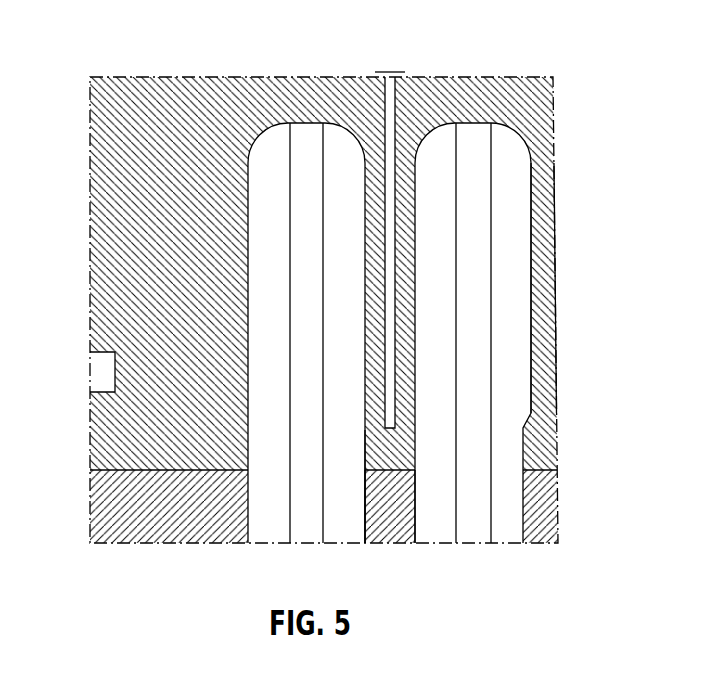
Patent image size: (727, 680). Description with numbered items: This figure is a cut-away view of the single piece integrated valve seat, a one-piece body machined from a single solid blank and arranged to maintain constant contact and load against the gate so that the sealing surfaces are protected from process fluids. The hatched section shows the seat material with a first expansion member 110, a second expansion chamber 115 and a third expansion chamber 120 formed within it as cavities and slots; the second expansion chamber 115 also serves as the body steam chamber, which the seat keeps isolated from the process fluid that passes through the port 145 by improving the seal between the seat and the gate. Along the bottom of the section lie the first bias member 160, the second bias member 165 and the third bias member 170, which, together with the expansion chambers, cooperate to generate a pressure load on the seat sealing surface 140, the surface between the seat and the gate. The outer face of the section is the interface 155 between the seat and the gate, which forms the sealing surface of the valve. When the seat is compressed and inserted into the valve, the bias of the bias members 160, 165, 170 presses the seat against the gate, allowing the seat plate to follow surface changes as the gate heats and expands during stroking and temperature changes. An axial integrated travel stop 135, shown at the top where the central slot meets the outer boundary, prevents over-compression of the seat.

The first expansion member 110 is at (508, 168).
The second expansion chamber 115 is at (391, 398).
The third expansion chamber 120 is at (268, 165).
The axial integrated travel stop 135 is at (390, 71).
The seat sealing surface 140 is at (556, 318).
The port 145 is at (108, 363).
The interface 155 is at (555, 237).
The first bias member 160 is at (558, 498).
The second bias member 165 is at (413, 533).
The third bias member 170 is at (367, 510).